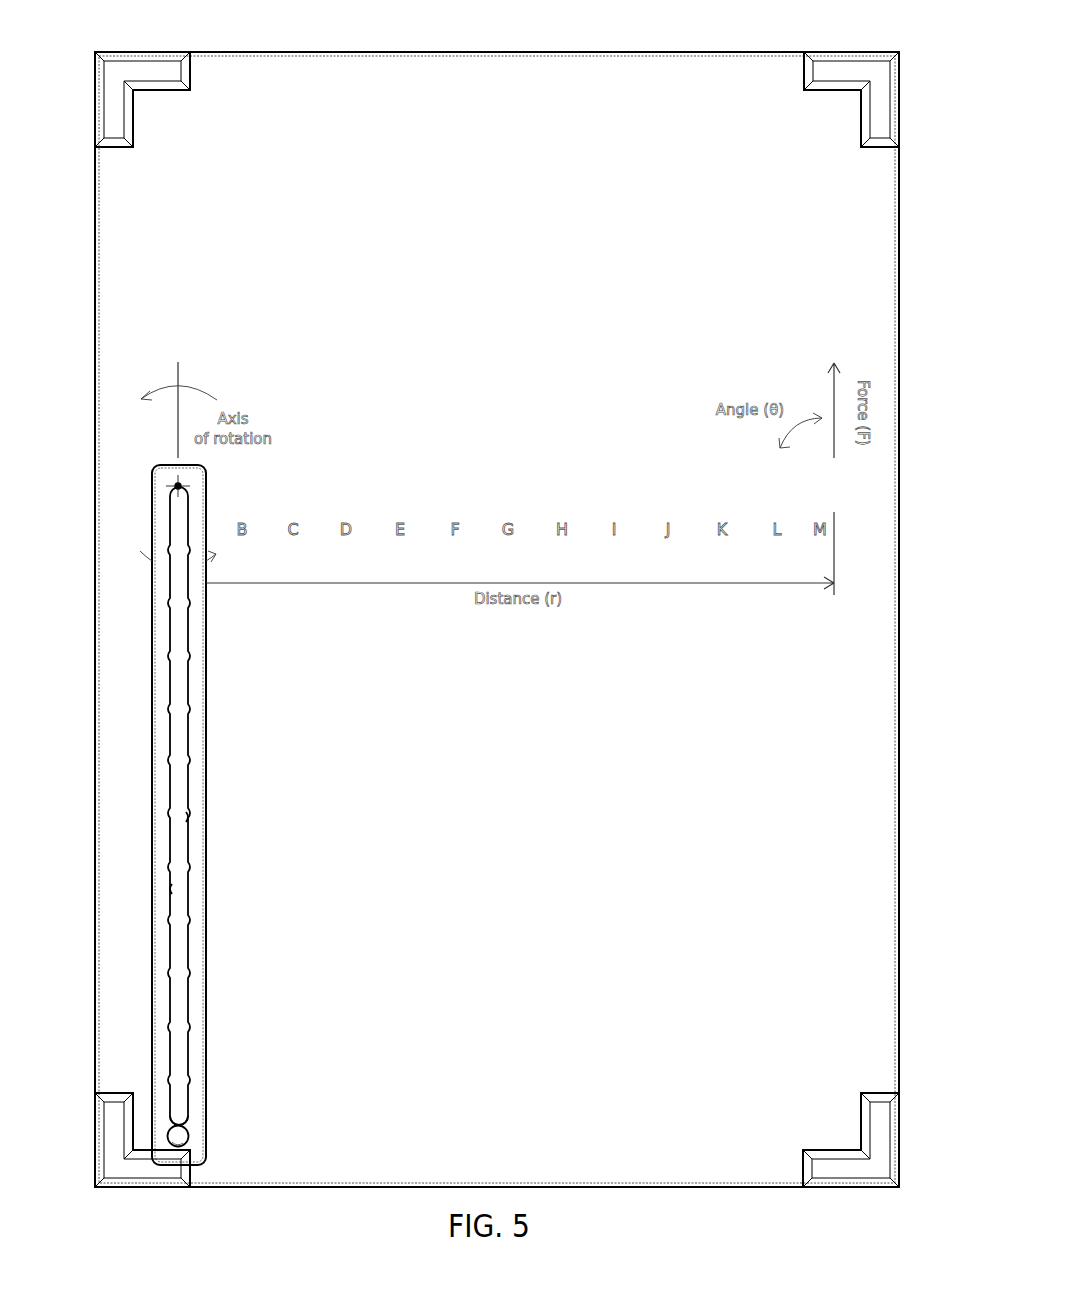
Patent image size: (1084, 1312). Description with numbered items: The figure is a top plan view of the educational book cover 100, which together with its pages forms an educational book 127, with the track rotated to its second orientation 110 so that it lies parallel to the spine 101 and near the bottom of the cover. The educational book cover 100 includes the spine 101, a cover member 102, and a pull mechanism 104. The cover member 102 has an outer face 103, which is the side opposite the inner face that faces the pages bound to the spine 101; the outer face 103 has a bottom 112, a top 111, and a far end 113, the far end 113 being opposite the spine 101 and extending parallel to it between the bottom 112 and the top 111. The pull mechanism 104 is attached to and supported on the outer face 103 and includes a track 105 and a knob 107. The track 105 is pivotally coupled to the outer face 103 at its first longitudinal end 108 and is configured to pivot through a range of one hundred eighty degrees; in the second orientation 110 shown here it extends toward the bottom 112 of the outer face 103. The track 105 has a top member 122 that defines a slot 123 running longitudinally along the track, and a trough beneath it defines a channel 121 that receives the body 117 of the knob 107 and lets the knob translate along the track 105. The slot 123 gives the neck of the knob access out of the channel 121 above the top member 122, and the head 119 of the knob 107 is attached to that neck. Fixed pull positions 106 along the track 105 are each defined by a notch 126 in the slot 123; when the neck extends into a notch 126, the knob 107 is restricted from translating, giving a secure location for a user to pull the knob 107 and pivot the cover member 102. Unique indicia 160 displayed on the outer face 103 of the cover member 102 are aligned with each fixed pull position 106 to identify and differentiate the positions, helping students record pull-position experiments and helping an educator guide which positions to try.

The educational book cover 100 is at (502, 614).
The spine 101 is at (95, 205).
The cover member 102 is at (737, 66).
The outer face 103 is at (657, 73).
The pull mechanism 104 is at (211, 769).
The track 105 is at (216, 734).
The fixed pull positions 106 is at (180, 806).
The knob 107 is at (191, 1153).
The first longitudinal end 108 is at (170, 465).
The second orientation 110 is at (211, 769).
The top 111 is at (542, 52).
The bottom 112 is at (657, 1187).
The far end 113 is at (899, 618).
The body 117 is at (180, 1121).
The head 119 is at (187, 1133).
The channel 121 is at (180, 946).
The top member 122 is at (193, 900).
The slot 123 is at (170, 891).
The notch 126 is at (188, 816).
The educational book 127 is at (928, 264).
The indicia 160 is at (528, 498).